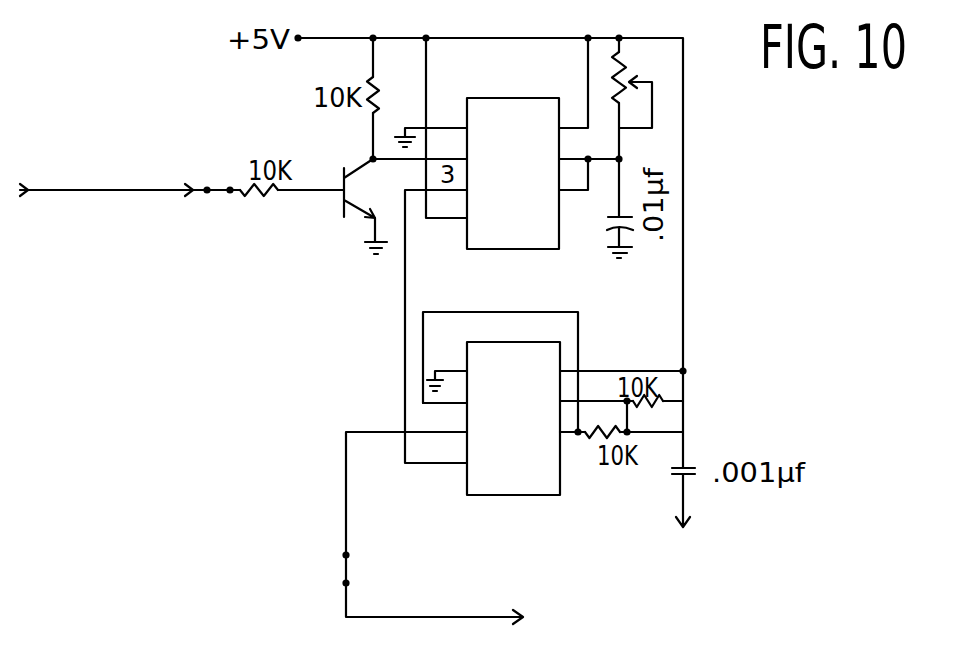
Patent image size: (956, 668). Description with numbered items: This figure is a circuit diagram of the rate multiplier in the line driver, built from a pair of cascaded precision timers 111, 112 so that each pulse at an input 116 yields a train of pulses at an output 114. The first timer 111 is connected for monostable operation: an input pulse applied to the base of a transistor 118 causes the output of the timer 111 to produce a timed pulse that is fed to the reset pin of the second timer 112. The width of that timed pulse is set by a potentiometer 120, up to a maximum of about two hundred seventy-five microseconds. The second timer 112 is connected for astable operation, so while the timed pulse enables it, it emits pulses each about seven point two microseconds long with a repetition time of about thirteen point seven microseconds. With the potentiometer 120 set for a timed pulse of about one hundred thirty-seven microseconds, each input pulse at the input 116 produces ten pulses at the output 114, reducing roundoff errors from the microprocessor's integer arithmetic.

The precision timer 111 is at (523, 98).
The precision timer 112 is at (522, 341).
The output 114 is at (516, 619).
The input 116 is at (207, 190).
The transistor 118 is at (345, 212).
The potentiometer 120 is at (628, 60).